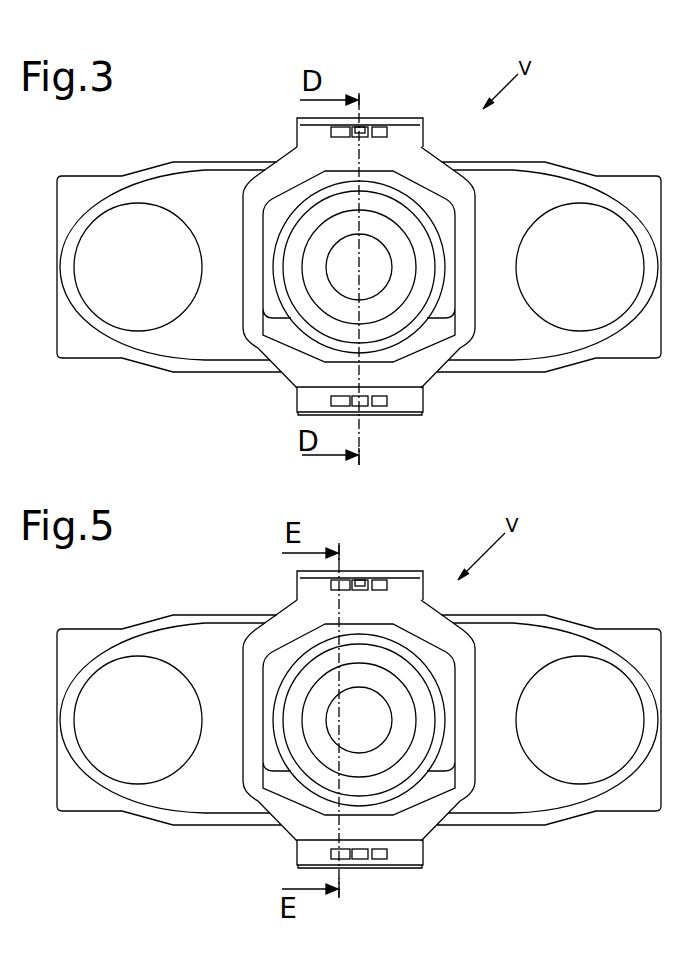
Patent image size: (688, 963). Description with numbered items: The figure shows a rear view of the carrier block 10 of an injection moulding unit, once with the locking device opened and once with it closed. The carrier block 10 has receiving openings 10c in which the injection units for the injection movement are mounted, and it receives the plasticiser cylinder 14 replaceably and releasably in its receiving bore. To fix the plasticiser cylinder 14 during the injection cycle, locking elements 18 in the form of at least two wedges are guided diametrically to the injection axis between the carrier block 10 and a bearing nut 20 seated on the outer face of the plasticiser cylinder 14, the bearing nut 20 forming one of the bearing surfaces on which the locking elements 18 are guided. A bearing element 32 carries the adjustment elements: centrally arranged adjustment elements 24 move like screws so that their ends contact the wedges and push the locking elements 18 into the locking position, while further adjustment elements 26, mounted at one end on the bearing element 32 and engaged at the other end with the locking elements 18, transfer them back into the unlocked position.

In FIG. 3, the carrier block 10 is at (165, 384).
In FIG. 5, the carrier block 10 is at (165, 837).
In FIG. 3, the receiving openings 10c is at (119, 279).
In FIG. 5, the receiving openings 10c is at (119, 732).
In FIG. 3, the plasticiser cylinder 14 is at (397, 247).
In FIG. 5, the plasticiser cylinder 14 is at (402, 735).
In FIG. 3, the locking elements 18 is at (277, 217).
In FIG. 5, the locking elements 18 is at (277, 667).
In FIG. 3, the bearing nut 20 is at (398, 318).
In FIG. 5, the bearing nut 20 is at (408, 768).
In FIG. 3, the adjustment elements 24 is at (363, 127).
In FIG. 5, the adjustment elements 24 is at (363, 573).
In FIG. 3, the further adjustment elements 26 is at (380, 131).
In FIG. 5, the further adjustment elements 26 is at (380, 576).
In FIG. 3, the bearing element 32 is at (410, 140).
In FIG. 5, the bearing element 32 is at (313, 592).